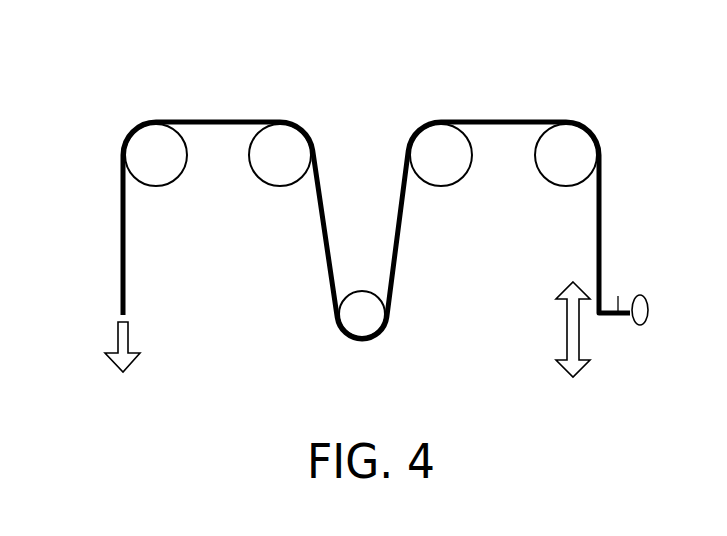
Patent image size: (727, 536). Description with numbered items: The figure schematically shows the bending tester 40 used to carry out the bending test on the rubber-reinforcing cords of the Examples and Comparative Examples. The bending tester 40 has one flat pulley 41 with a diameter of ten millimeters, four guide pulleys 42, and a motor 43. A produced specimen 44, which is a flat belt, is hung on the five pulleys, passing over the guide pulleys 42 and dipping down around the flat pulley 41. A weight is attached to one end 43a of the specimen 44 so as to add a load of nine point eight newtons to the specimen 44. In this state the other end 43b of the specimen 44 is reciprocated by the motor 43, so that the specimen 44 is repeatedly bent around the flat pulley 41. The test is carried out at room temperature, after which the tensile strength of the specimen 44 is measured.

The bending tester 40 is at (86, 101).
The flat pulley 41 is at (368, 318).
The guide pulleys 42 is at (155, 177).
The motor 43 is at (641, 325).
The one end of the specimen 43a is at (132, 306).
The other end of the specimen 43b is at (622, 303).
The specimen 44 is at (229, 121).